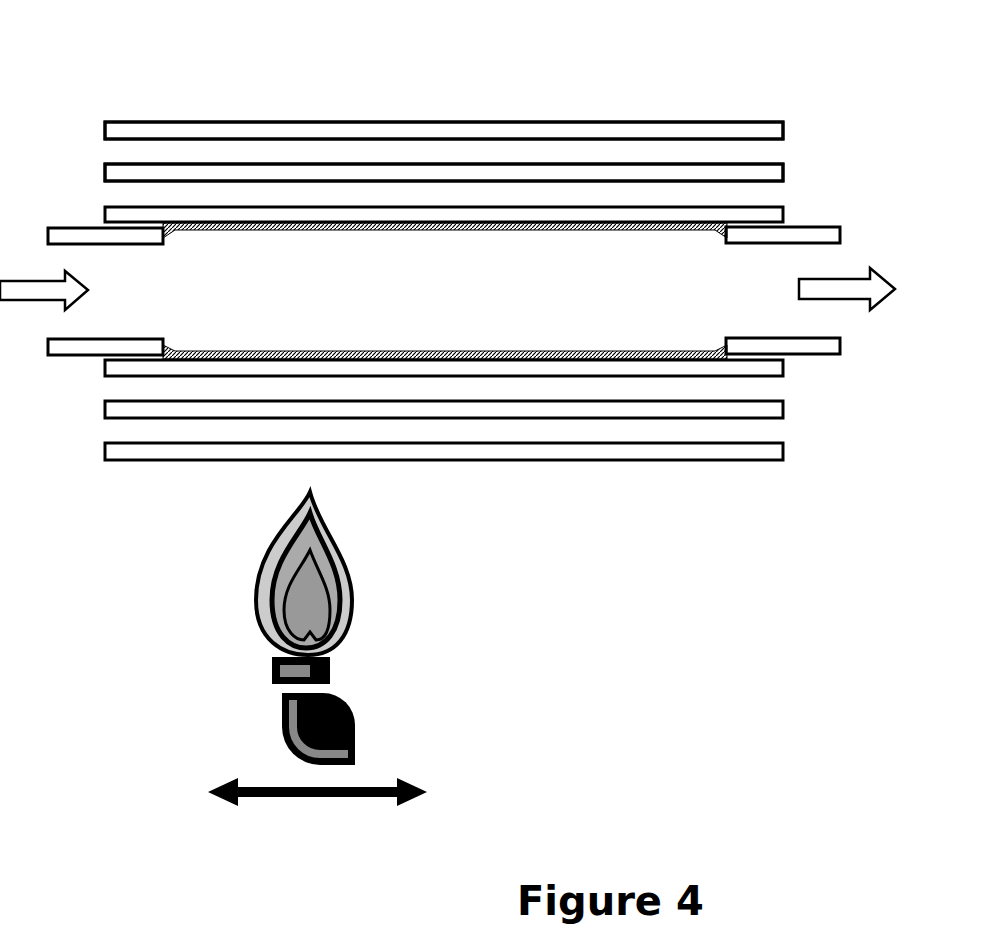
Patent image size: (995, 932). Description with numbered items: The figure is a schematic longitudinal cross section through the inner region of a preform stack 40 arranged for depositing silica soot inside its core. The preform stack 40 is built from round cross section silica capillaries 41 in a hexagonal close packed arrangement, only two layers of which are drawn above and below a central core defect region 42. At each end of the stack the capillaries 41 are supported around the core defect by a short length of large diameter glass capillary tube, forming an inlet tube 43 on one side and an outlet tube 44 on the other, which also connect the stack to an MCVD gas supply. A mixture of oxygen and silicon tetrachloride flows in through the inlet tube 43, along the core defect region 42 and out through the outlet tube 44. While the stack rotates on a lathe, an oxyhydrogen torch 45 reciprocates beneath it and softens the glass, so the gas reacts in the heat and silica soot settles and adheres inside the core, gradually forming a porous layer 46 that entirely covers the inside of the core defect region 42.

The preform stack 40 is at (172, 91).
The silica capillaries 41 is at (797, 172).
The core defect region 42 is at (398, 308).
The inlet tube 43 is at (90, 357).
The outlet tube 44 is at (800, 356).
The oxyhydrogen torch 45 is at (378, 566).
The porous layer 46 is at (668, 347).